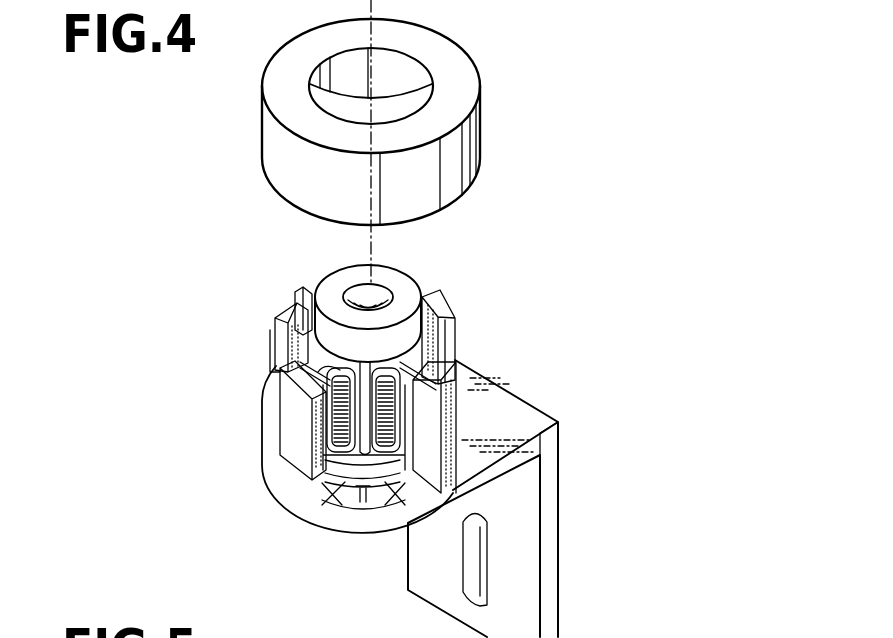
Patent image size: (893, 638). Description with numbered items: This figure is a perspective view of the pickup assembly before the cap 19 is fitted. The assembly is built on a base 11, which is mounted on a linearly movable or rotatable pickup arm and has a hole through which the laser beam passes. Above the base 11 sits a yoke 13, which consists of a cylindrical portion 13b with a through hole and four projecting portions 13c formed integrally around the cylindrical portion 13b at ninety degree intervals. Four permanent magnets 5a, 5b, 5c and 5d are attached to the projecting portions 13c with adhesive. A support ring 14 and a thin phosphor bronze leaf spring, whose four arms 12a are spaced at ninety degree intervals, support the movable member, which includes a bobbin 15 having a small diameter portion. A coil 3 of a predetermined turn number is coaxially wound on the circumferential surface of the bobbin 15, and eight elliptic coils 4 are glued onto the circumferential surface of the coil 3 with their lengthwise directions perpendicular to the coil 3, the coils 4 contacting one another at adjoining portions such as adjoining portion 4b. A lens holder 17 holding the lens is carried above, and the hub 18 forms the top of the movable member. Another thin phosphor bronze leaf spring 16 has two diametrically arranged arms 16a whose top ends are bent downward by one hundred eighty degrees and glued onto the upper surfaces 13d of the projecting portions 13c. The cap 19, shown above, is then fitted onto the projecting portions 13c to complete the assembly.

The cap 19 is at (275, 132).
The hub 18 is at (388, 277).
The lens holder 17 is at (352, 283).
The leaf spring 16 is at (309, 290).
The arms 16a is at (440, 395).
The adjoining portion 4b is at (374, 372).
The coils 4 is at (362, 470).
The bobbin 15 is at (330, 410).
The coil 3 is at (318, 448).
The arms 12a is at (367, 515).
The support ring 14 is at (380, 475).
The permanent magnet 5a is at (450, 312).
The permanent magnet 5b is at (407, 437).
The permanent magnet 5c is at (313, 363).
The permanent magnet 5d is at (280, 320).
The yoke 13 is at (268, 400).
The cylindrical portion 13b is at (453, 330).
The projecting portions 13c is at (280, 350).
The upper surfaces 13d is at (288, 312).
The base 11 is at (537, 512).